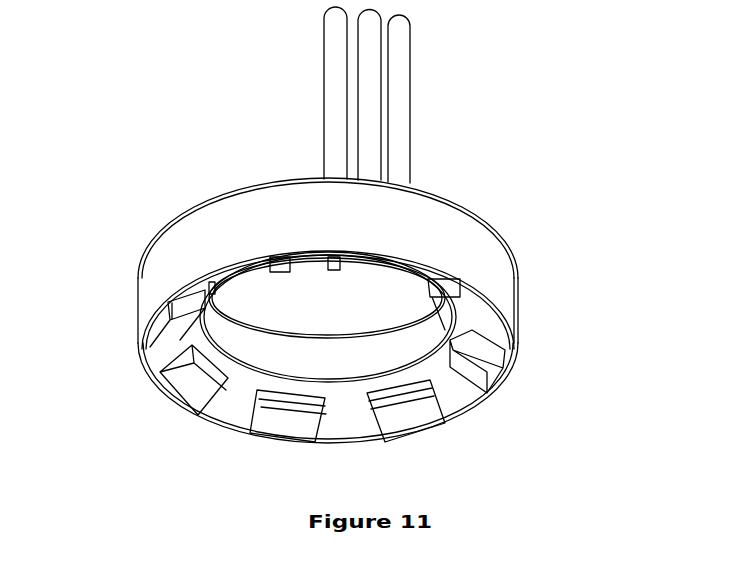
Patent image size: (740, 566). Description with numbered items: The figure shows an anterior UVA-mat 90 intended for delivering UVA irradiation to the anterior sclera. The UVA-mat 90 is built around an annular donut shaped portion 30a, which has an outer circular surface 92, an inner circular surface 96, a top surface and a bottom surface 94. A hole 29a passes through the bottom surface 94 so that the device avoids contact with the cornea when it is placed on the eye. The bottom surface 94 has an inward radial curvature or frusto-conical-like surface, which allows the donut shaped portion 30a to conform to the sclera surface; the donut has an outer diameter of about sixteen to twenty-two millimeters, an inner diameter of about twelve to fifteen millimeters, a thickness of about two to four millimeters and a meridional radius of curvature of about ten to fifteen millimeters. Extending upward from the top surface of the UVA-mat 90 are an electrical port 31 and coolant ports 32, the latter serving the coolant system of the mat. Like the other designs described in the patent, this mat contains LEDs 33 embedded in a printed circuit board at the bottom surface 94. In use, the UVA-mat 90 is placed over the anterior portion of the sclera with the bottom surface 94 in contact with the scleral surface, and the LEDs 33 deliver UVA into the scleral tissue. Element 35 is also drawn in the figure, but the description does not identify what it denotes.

The anterior UVA-mat 90 is at (201, 119).
The electrical port 31 is at (386, 45).
The coolant ports 32 is at (355, 105).
The outer circular surface 92 is at (501, 269).
The bottom rim 35 is at (529, 383).
The annular donut shaped portion 30a is at (191, 258).
The hole 29a is at (352, 312).
The inner circular surface 96 is at (251, 358).
The bottom surface 94 is at (213, 412).
The LEDs 33 is at (459, 423).